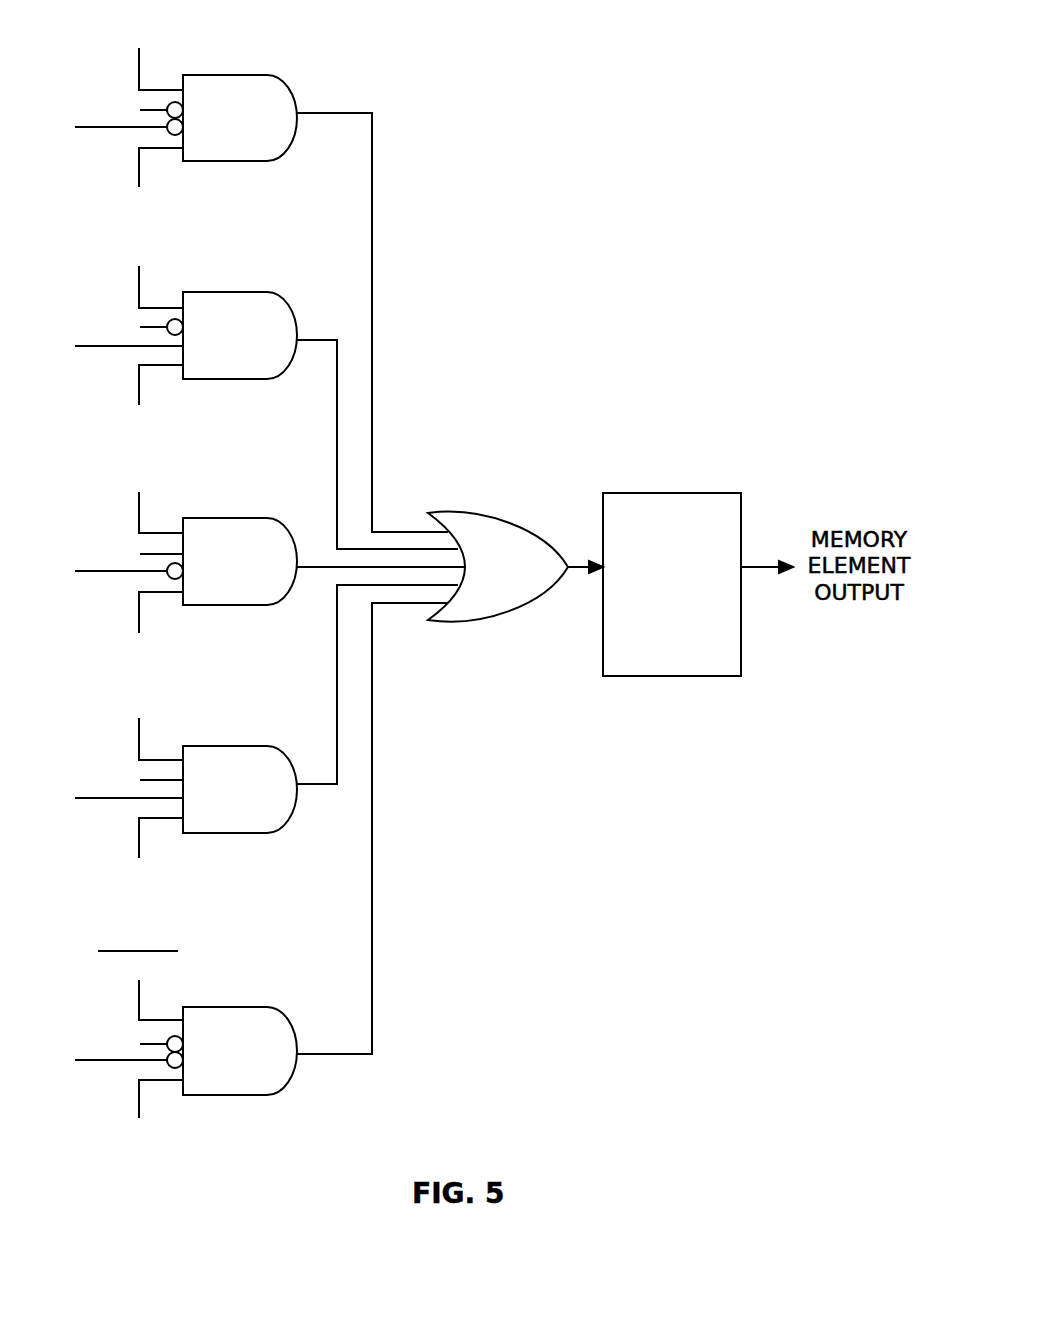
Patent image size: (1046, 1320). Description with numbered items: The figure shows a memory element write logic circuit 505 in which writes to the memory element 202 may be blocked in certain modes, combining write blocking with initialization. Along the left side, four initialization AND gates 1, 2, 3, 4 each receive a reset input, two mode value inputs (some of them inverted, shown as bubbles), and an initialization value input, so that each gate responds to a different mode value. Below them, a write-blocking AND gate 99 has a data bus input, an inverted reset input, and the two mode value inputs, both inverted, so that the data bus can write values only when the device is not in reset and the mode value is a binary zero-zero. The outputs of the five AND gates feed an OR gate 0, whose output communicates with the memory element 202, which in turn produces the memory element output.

The memory element 202 is at (672, 492).
The memory element write logic circuit 505 is at (640, 990).
The AND gate G1 1 is at (240, 277).
The AND gate G2 2 is at (245, 395).
The AND gate G3 3 is at (249, 568).
The AND gate G4 4 is at (245, 741).
The write-blocking AND gate G99 99 is at (240, 892).
The OR gate G0 0 is at (515, 567).